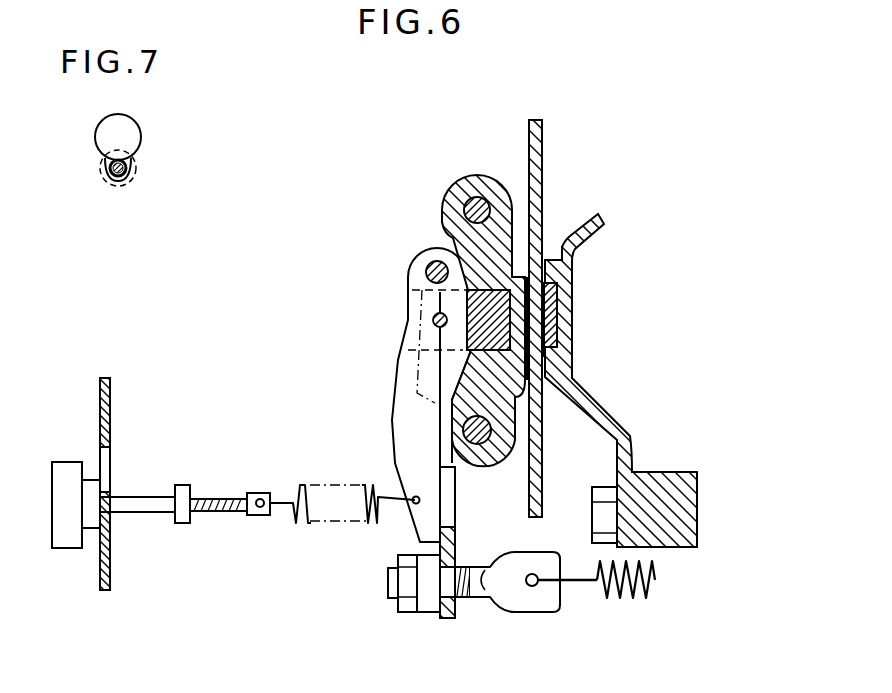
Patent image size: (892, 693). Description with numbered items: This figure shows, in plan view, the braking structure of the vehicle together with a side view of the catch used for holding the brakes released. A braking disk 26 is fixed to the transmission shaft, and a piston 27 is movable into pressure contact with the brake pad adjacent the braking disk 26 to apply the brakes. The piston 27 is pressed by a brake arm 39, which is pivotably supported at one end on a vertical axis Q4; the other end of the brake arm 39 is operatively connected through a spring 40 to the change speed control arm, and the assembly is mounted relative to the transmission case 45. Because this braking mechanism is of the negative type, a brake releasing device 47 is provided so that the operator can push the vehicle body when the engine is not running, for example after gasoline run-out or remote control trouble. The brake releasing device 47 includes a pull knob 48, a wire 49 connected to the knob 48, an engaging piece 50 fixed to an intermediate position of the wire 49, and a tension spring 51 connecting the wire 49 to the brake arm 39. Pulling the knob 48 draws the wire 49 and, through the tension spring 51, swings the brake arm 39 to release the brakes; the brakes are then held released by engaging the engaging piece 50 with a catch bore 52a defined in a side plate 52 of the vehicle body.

In FIG. 6, the braking disk 26 is at (530, 148).
In FIG. 6, the piston 27 is at (467, 305).
In FIG. 6, the brake arm 39 is at (393, 413).
In FIG. 6, the vertical axis Q4 is at (426, 263).
In FIG. 6, the transmission case 45 is at (592, 410).
In FIG. 6, the spring 40 is at (623, 597).
In FIG. 6, the brake releasing device 47 is at (238, 460).
In FIG. 6, the pull knob 48 is at (68, 540).
In FIG. 6, the wire 49 is at (230, 512).
In FIG. 6, the engaging piece 50 is at (182, 525).
In FIG. 7, the engaging piece 50 is at (132, 183).
In FIG. 6, the tension spring 51 is at (310, 528).
In FIG. 6, the side plate 52 is at (100, 405).
In FIG. 6, the catch bore 52a is at (108, 483).
In FIG. 7, the catch bore 52a is at (102, 173).